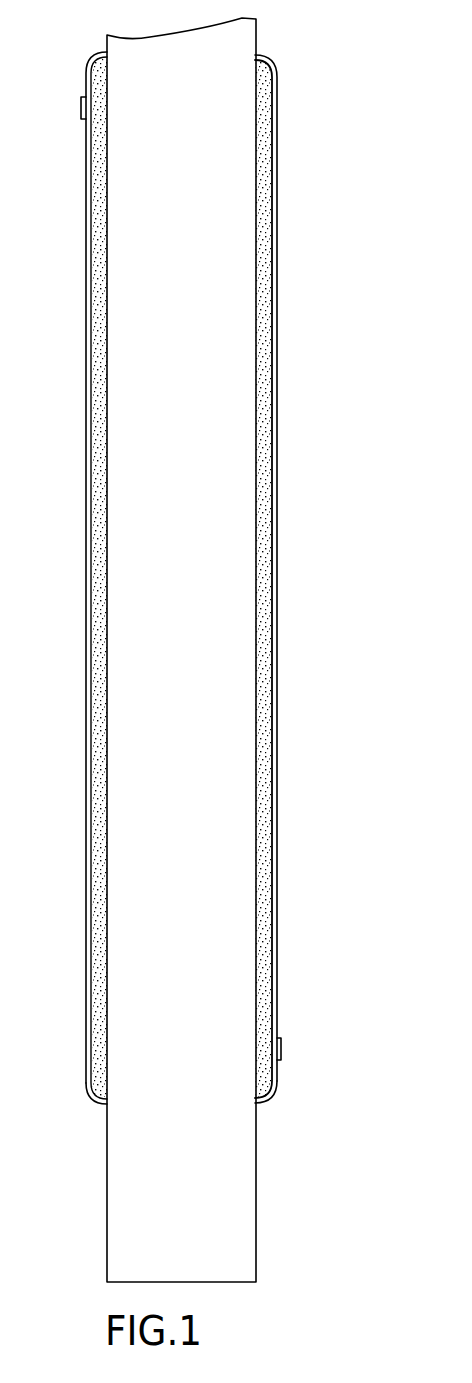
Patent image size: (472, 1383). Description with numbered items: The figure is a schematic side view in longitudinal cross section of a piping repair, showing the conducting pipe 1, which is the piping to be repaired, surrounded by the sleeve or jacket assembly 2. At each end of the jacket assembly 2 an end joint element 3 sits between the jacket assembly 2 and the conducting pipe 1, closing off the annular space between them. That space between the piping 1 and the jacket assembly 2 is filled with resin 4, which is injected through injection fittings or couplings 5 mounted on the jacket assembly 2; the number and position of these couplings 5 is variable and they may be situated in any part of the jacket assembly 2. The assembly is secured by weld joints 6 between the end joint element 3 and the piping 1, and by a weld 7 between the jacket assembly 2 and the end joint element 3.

The conducting pipe 1 is at (78, 1236).
The sleeve or jacket assembly 2 is at (183, 592).
The end joint element 3 is at (268, 58).
The resin 4 is at (263, 190).
The injection fittings or couplings 5 is at (80, 108).
The weld joints 6 is at (105, 1104).
The weld 7 is at (272, 84).